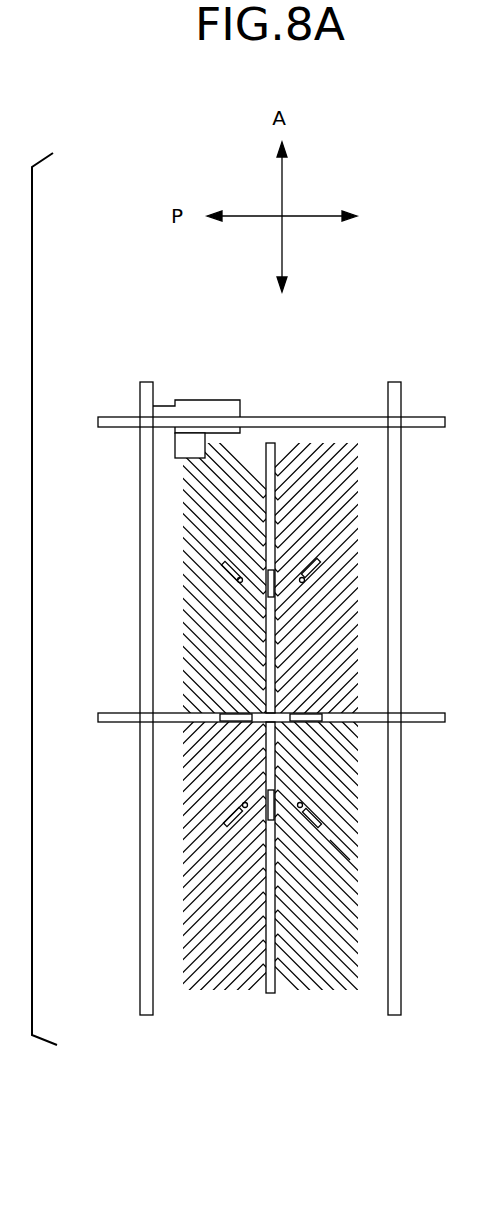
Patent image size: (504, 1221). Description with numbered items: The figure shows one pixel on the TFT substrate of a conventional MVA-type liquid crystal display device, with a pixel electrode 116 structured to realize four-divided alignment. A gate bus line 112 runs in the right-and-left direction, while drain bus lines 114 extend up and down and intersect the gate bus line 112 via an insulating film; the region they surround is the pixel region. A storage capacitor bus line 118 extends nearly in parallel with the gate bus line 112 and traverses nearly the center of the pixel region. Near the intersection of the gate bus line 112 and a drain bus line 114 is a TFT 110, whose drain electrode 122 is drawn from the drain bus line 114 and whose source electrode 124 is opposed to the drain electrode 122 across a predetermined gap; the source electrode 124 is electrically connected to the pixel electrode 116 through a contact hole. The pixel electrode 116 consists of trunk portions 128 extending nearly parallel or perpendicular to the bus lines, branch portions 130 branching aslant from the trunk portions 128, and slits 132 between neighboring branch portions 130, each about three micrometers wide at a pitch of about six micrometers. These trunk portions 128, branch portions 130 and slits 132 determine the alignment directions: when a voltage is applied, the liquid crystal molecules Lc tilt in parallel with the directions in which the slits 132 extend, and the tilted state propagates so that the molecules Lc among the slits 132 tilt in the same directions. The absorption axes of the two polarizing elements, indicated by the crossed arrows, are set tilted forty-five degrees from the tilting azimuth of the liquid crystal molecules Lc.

The TFT 110 is at (221, 402).
The gate bus line 112 is at (98, 421).
The drain bus line 114 is at (146, 382).
The pixel electrode 116 is at (381, 482).
The storage capacitor bus line 118 is at (98, 718).
The drain electrode 122 is at (184, 400).
The source electrode 124 is at (240, 428).
The trunk portion 128 is at (183, 722).
The branch portion 130 is at (360, 880).
The slit 132 is at (348, 858).
The liquid crystal molecule Lc is at (305, 578).